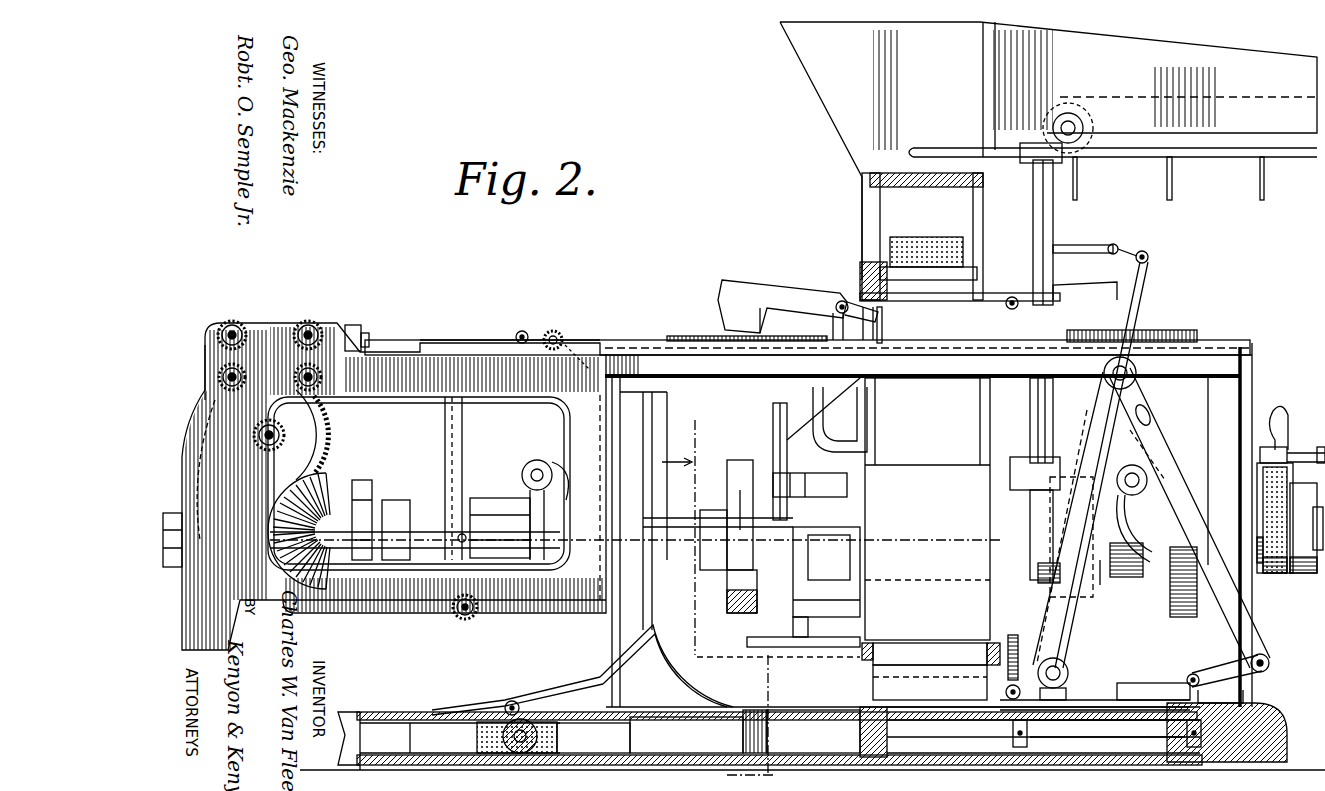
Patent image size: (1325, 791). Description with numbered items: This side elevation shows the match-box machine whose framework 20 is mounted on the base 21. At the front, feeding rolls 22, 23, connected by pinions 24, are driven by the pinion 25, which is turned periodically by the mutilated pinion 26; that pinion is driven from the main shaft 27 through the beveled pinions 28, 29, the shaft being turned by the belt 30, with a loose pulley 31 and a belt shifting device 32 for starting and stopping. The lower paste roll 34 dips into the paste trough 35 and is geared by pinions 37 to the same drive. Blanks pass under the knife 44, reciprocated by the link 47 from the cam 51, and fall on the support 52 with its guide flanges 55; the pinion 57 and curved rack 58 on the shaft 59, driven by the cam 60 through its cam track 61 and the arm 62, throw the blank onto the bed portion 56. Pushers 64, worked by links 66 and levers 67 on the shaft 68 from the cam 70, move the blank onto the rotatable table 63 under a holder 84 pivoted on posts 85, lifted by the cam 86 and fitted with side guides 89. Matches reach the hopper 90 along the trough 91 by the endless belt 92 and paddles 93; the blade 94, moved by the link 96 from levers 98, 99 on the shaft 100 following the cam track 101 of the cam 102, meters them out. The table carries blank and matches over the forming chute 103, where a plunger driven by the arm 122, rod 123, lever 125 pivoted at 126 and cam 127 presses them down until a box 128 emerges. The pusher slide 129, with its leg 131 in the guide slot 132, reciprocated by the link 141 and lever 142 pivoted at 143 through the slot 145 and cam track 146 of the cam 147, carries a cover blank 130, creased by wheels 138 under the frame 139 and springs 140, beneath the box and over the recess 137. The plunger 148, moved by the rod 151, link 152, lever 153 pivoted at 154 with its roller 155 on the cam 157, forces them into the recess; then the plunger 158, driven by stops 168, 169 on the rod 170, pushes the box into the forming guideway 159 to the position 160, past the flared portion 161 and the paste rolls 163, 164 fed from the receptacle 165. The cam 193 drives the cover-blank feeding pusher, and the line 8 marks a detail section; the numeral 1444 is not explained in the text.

The section line 8— 8 is at (724, 602).
The framework 20 is at (272, 323).
The base 21 is at (362, 713).
The feeding roll 22 is at (250, 322).
The feeding roll 23 is at (205, 362).
The pinions 24 is at (230, 320).
The pinion 25 is at (320, 450).
The mutilated pinion 26 is at (338, 478).
The rotating shaft 27 is at (425, 522).
The beveled pinion 28 is at (192, 423).
The beveled pinion 29 is at (345, 490).
The belt 30 is at (1275, 580).
The loose pulley 31 is at (1290, 518).
The belt shifting device 32 is at (1289, 428).
The paste applying roll 34 is at (350, 330).
The paste trough 35 is at (330, 413).
The pinions 37 is at (318, 324).
The reciprocating cutter or knife 44 is at (365, 337).
The link 47 is at (372, 492).
The cam 51 is at (378, 502).
The support 52 is at (407, 342).
The guide flanges 55 is at (460, 342).
The bed portion 56 is at (640, 354).
The pinion 57 is at (556, 326).
The curved rack 58 is at (626, 354).
The shaft 59 is at (522, 468).
The cam 60 is at (570, 522).
The cam track 61 is at (562, 495).
The arm 62 is at (528, 497).
The rotatable table 63 is at (702, 340).
The pushers 64 is at (577, 342).
The links 66 is at (522, 331).
The levers 67 is at (444, 420).
The shaft 68 is at (476, 614).
The cam 70 is at (500, 528).
The holders or guides 84 is at (762, 300).
The posts 85 is at (882, 327).
The cam 86 is at (840, 300).
The side guides 89 is at (781, 321).
The match hopper 90 is at (848, 150).
The trough 91 is at (1148, 87).
The endless belt 92 is at (1215, 163).
The paddles 93 is at (1166, 183).
The blade 94 is at (1079, 253).
The link 96 is at (1143, 252).
The lever 98 is at (1152, 270).
The lever 99 is at (1040, 593).
The shaft 100 is at (1069, 670).
The cam track 101 is at (1075, 470).
The cam 102 is at (1076, 518).
The forming chute 103 is at (927, 509).
The arm 122 is at (1011, 172).
The reciprocating rod 123 is at (1055, 208).
The lever 125 is at (1030, 458).
The pivot 126 is at (1010, 488).
The cam 127 is at (990, 555).
The box 128 is at (868, 688).
The pusher slide 129 is at (1186, 681).
The cover blank 130 is at (1097, 697).
The depending projection or leg 131 is at (1165, 728).
The guide slot 132 is at (1087, 733).
The recess 137 is at (801, 731).
The creasing wheels 138 is at (985, 690).
The frame 139 is at (1018, 660).
The springs 140 is at (985, 666).
The link 141 is at (1255, 684).
The lever 142 is at (1253, 625).
The pivot 143 is at (1137, 373).
The slot 145 is at (1152, 418).
The lever slot 1444 is at (1140, 446).
The cam track 146 is at (1150, 570).
The cam 147 is at (1141, 536).
The plunger 148 is at (803, 642).
The rod 151 is at (816, 505).
The link 152 is at (775, 420).
The lever 153 is at (768, 440).
The pivot 154 is at (790, 482).
The roller 155 is at (735, 497).
The cam 157 is at (730, 612).
The plunger 158 is at (933, 745).
The forming guideway 159 is at (593, 738).
The box 160 is at (686, 735).
The flared portion 161 is at (666, 666).
The paste applying roll 163 is at (515, 702).
The paste applying roll 164 is at (500, 718).
The paste receptacle 165 is at (572, 690).
The stop 168 is at (1206, 740).
The stop 169 is at (1018, 746).
The rod 170 is at (1188, 745).
The cam 193 is at (1172, 606).